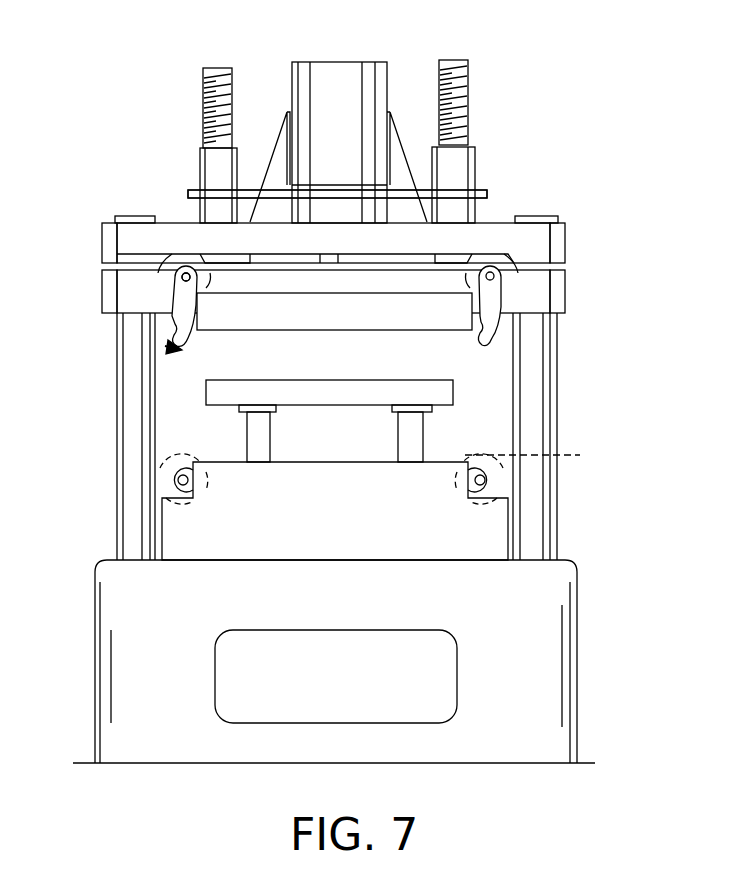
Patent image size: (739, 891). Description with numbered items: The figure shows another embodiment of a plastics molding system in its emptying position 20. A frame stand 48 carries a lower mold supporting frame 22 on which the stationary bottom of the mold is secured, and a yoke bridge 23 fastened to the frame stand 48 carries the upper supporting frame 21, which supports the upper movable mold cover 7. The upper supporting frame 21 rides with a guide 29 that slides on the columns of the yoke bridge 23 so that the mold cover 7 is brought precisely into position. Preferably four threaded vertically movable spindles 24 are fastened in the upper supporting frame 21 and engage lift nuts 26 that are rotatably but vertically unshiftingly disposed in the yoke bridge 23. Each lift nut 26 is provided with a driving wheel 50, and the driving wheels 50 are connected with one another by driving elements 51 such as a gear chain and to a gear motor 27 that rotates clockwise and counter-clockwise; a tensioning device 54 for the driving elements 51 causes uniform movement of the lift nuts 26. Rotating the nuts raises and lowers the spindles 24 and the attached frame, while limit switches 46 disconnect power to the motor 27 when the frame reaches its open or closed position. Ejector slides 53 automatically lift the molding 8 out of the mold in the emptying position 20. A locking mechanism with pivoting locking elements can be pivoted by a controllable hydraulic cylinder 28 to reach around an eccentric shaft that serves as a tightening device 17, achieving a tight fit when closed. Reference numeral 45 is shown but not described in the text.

The gear motor 27 is at (346, 78).
The threaded vertically movable spindles 24 is at (205, 88).
The lift nuts 26 is at (212, 170).
The driving wheel 50 is at (190, 194).
The driving elements 51 is at (490, 194).
The yoke bridge 23 is at (550, 237).
The limit switches 46 is at (190, 252).
The upper supporting frame 21 is at (172, 292).
The guide 29 is at (552, 290).
The upper movable mold cover 7 is at (172, 326).
The tensioning device 54 is at (508, 306).
The emptying position 20 is at (168, 348).
The molding 8 is at (206, 394).
The ejector slides 53 is at (418, 430).
The hydraulic cylinder 28 is at (542, 448).
The tightening device 17 is at (178, 480).
The latch catch 45 is at (450, 478).
The lower mold supporting frame 22 is at (500, 536).
The frame stand 48 is at (128, 662).